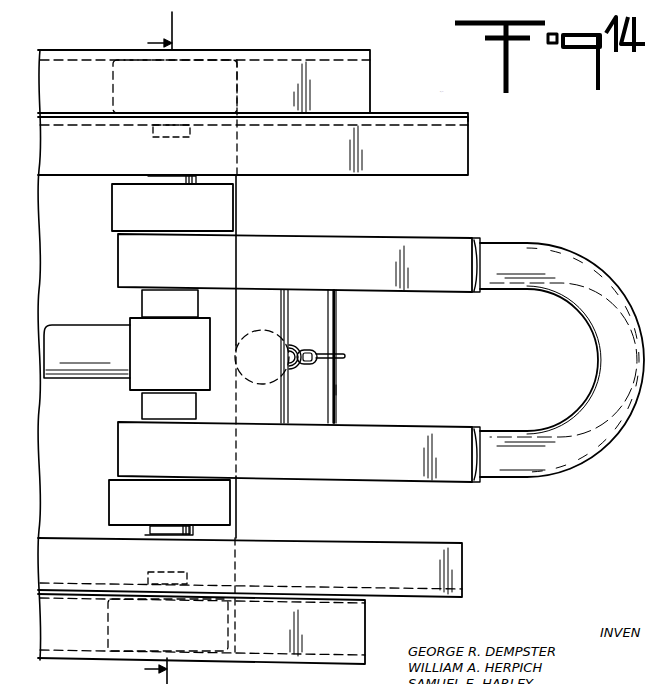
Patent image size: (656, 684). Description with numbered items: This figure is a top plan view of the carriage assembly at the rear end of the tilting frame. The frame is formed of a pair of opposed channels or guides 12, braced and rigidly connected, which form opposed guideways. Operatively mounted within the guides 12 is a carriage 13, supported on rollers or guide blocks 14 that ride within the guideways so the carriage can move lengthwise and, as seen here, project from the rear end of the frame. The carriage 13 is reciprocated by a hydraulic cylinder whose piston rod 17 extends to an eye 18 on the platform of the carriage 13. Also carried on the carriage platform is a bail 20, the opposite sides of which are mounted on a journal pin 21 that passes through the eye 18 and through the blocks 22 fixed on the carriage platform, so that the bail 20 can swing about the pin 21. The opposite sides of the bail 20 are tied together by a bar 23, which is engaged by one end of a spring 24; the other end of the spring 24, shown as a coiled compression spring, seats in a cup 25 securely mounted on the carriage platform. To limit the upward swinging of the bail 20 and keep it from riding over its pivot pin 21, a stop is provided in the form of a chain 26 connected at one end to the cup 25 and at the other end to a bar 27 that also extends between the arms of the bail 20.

The channels or guides 12 is at (66, 52).
The carriage 13 is at (444, 132).
The rollers or guide blocks 14 is at (222, 92).
The piston rod 17 is at (82, 338).
The eye 18 is at (138, 324).
The bail 20 is at (600, 358).
The journal pin 21 is at (176, 536).
The blocks 22 is at (120, 202).
The bar 23 is at (266, 305).
The spring 24 is at (294, 344).
The cup 25 is at (300, 351).
The chain 26 is at (322, 363).
The bar 27 is at (334, 391).